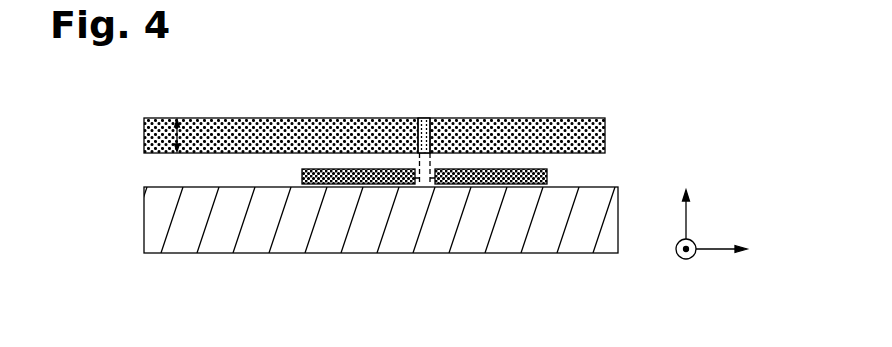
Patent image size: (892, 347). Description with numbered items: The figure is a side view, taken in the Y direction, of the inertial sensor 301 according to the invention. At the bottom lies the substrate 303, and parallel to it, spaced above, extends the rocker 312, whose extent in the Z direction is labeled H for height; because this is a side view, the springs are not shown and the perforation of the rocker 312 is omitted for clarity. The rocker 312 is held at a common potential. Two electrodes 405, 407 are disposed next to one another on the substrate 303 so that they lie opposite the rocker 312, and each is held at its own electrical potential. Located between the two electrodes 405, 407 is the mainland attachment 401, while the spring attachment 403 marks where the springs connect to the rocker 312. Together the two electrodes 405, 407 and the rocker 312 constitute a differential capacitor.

The inertial sensor 301 is at (597, 70).
The rocker 312 is at (149, 134).
The substrate 303 is at (153, 222).
The mainland attachment 401 is at (420, 163).
The spring attachment 403 is at (425, 118).
The electrode 405 is at (331, 179).
The electrode 407 is at (512, 179).